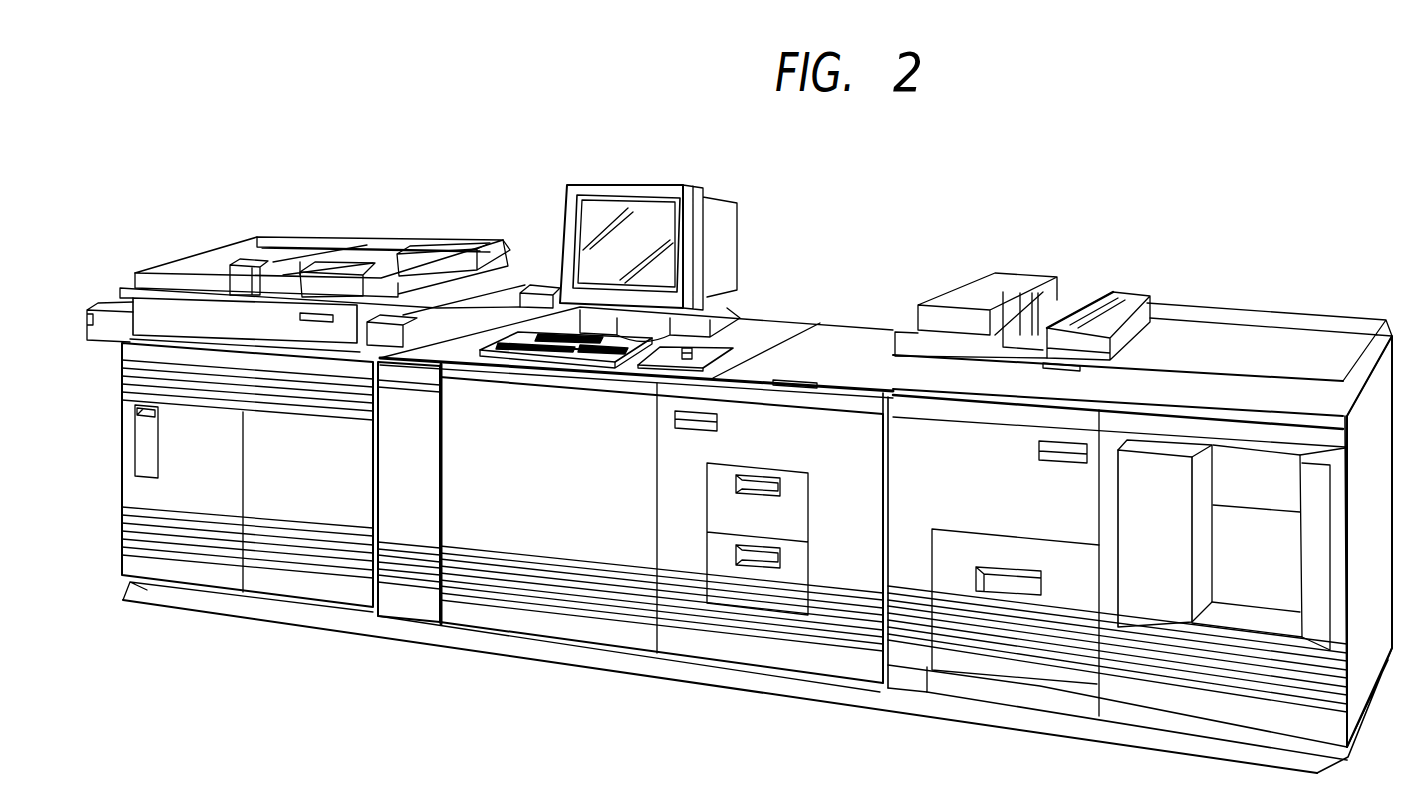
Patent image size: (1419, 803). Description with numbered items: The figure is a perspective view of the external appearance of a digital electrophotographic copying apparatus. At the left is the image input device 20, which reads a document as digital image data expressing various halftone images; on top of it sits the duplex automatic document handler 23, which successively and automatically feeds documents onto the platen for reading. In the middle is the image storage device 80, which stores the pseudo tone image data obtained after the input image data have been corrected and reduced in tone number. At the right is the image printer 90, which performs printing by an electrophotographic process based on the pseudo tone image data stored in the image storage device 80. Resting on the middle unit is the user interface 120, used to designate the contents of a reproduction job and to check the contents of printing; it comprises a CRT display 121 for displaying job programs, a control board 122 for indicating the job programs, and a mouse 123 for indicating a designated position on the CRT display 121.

The image input device 20 is at (325, 230).
The duplex automatic document handler 23 is at (387, 243).
The image storage device 80 is at (846, 284).
The image printer 90 is at (1220, 286).
The user interface 120 is at (643, 181).
The CRT display 121 is at (588, 228).
The control board 122 is at (538, 348).
The mouse 123 is at (650, 367).